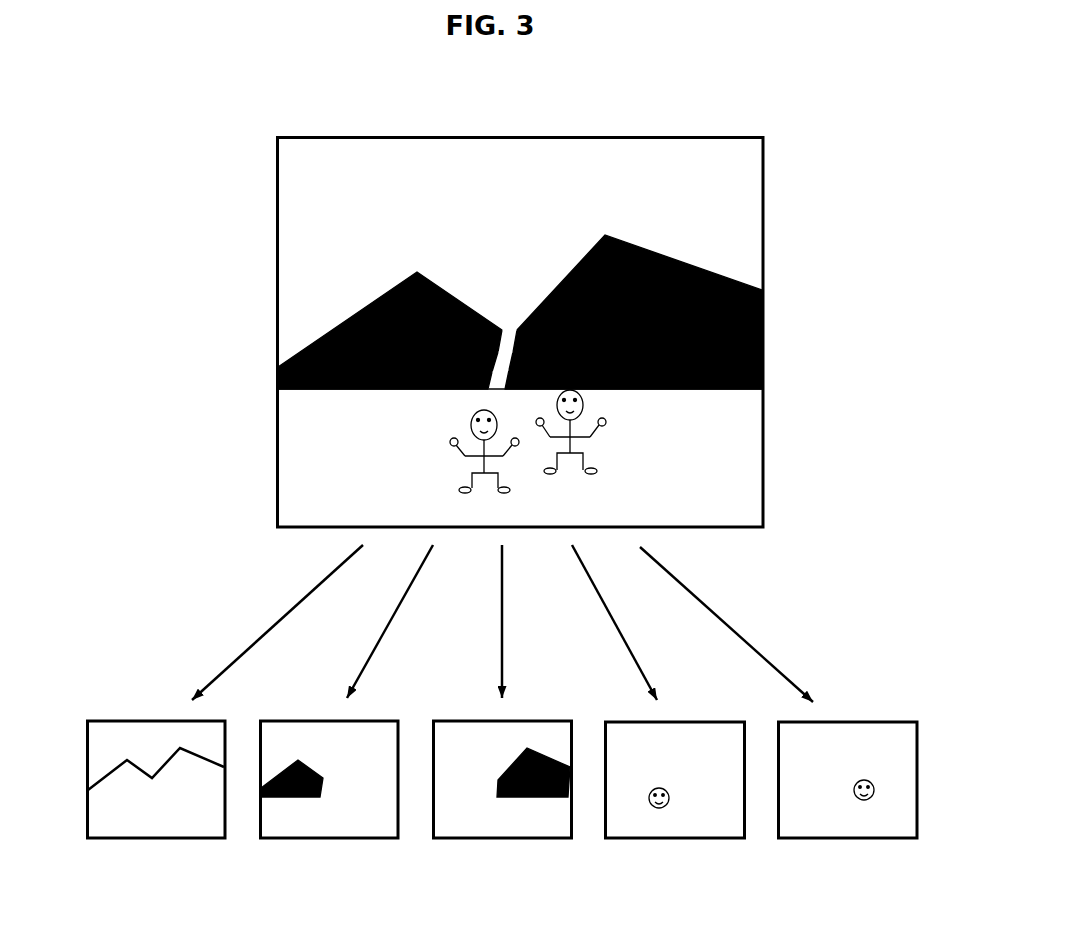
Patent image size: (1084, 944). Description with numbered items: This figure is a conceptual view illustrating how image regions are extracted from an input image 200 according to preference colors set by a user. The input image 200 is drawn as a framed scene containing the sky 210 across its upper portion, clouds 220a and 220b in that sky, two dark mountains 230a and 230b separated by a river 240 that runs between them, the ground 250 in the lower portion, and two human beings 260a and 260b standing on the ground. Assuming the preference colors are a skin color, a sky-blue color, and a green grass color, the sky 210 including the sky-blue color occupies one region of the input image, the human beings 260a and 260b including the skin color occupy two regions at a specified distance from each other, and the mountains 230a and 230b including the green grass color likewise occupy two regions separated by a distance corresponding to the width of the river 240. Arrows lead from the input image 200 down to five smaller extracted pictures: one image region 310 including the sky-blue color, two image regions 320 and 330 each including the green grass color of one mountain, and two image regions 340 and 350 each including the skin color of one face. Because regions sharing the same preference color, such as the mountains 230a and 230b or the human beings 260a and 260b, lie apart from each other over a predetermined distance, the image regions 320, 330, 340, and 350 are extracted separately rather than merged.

The input image 200 is at (548, 293).
The sky 210 is at (743, 187).
The cloud 220a is at (398, 185).
The cloud 220b is at (648, 147).
The mountain 230a is at (418, 274).
The mountain 230b is at (735, 282).
The river 240 is at (504, 330).
The ground 250 is at (743, 460).
The human being 260a is at (474, 411).
The human being 260b is at (587, 410).
The image region 310 is at (152, 840).
The image region 320 is at (325, 840).
The image region 330 is at (497, 840).
The image region 340 is at (668, 840).
The image region 350 is at (843, 840).